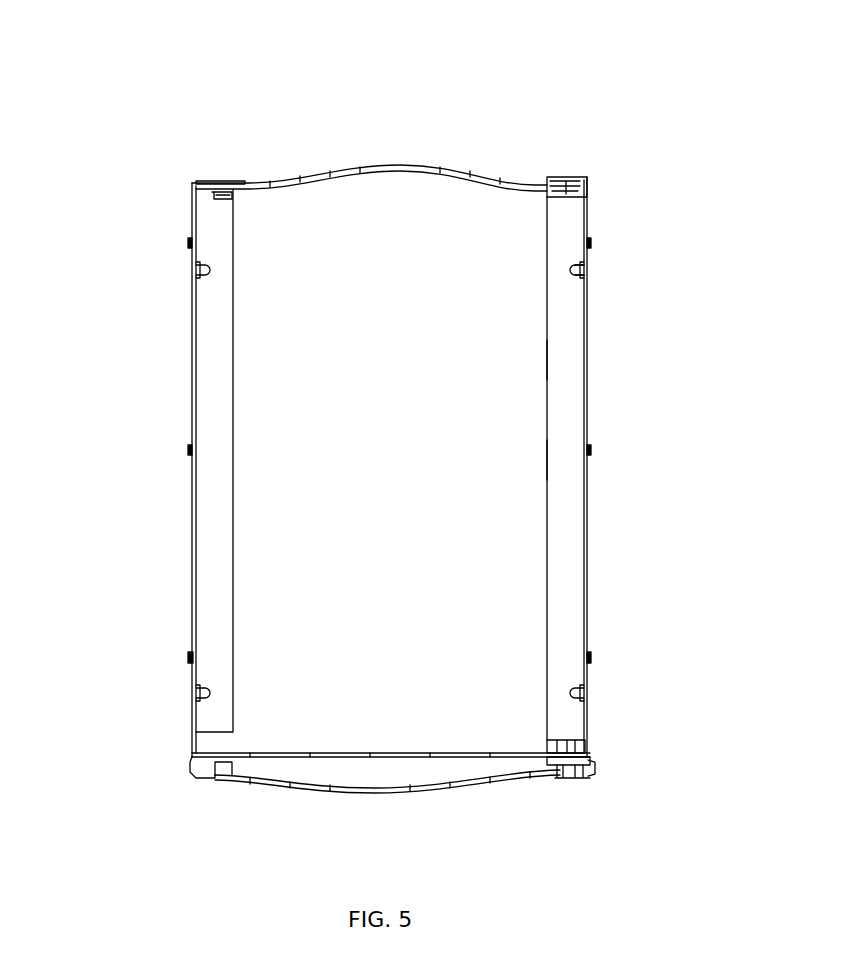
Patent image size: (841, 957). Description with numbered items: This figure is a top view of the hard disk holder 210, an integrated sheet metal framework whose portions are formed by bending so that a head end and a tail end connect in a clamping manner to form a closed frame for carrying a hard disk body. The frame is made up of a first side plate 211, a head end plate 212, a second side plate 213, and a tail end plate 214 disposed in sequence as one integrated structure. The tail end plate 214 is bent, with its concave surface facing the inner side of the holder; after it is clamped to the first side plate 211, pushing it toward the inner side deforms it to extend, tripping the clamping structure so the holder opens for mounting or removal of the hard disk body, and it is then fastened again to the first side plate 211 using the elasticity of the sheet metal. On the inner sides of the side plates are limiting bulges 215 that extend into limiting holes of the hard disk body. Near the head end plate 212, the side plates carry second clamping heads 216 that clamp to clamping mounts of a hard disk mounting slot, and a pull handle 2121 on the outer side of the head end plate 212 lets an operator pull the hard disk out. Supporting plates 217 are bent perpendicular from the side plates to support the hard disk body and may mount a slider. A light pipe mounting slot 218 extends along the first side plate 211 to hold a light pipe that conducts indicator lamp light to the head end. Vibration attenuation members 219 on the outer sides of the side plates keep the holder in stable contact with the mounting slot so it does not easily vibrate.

The hard disk holder 210 is at (380, 71).
The first side plate 211 is at (590, 385).
The head end plate 212 is at (327, 752).
The pull handle 2121 is at (375, 790).
The second side plate 213 is at (193, 393).
The tail end plate 214 is at (388, 165).
The limiting bulge 215 is at (570, 275).
The second clamping head 216 is at (187, 765).
The supporting plate 217 is at (563, 362).
The light pipe mounting slot 218 is at (560, 463).
The vibration attenuation member 219 is at (190, 656).